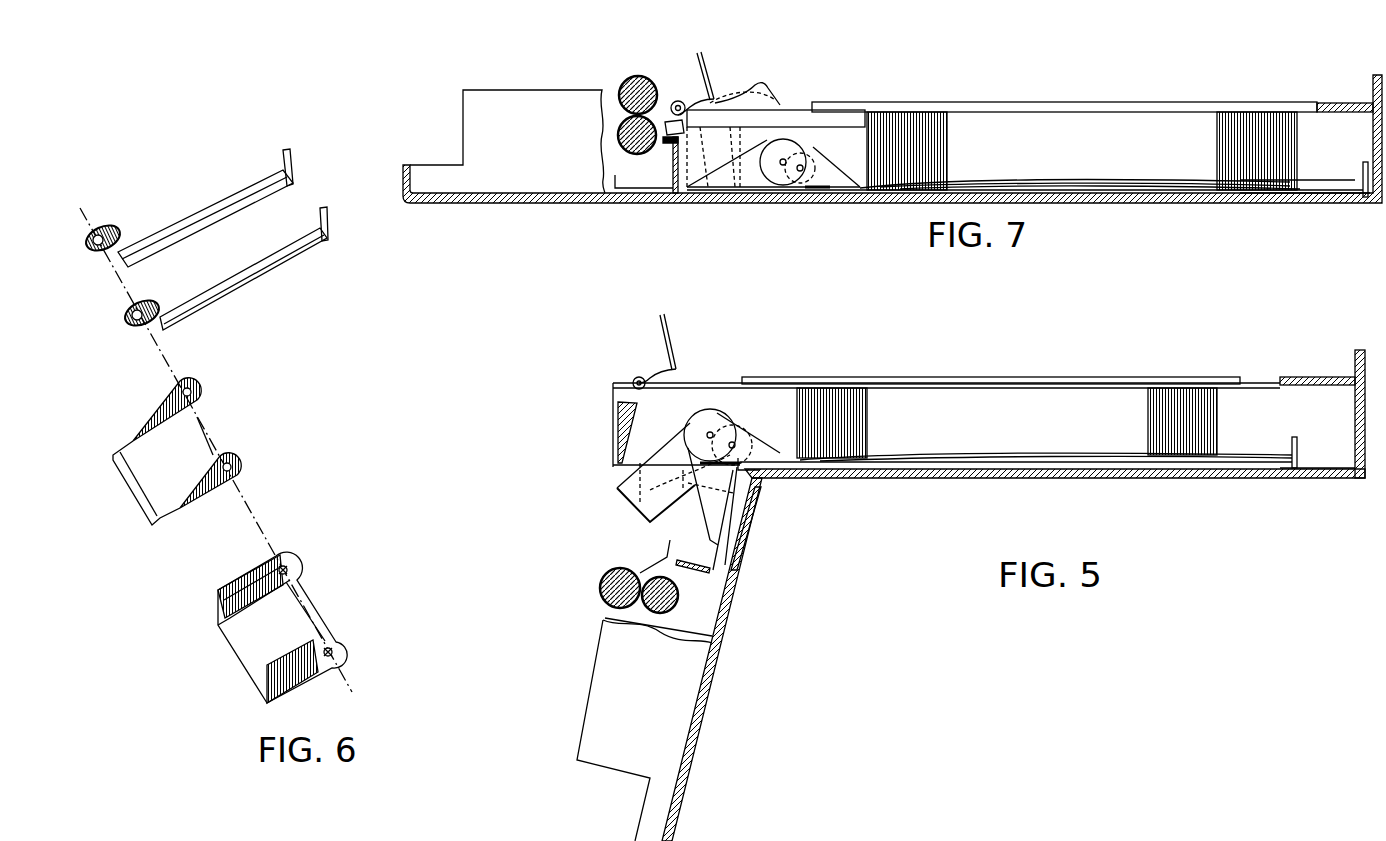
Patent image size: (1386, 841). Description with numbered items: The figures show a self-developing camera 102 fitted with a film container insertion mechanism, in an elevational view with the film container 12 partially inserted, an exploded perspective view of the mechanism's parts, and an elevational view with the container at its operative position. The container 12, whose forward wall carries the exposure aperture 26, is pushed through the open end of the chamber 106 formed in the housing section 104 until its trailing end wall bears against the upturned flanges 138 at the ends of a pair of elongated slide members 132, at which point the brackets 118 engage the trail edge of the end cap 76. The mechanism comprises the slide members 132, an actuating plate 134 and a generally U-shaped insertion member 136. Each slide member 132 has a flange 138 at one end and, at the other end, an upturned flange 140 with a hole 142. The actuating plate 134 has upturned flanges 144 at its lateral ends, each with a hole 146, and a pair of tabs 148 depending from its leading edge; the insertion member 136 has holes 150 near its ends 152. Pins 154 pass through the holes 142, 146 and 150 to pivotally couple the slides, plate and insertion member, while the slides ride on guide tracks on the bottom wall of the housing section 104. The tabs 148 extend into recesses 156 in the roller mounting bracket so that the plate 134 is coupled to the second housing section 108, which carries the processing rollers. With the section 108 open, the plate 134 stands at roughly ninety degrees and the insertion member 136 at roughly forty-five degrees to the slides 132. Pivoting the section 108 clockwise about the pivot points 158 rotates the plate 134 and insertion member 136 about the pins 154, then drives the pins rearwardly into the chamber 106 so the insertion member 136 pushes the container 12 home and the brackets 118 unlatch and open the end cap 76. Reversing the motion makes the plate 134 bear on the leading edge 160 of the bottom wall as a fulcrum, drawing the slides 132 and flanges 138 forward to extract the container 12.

In FIG. 7, the film container 12 is at (1147, 178).
In FIG. 5, the film container 12 is at (1153, 460).
In FIG. 7, the exposure aperture 26 is at (876, 102).
In FIG. 5, the exposure aperture 26 is at (853, 377).
In FIG. 7, the end cap 76 is at (680, 100).
In FIG. 5, the end cap 76 is at (613, 388).
In FIG. 7, the camera 102 is at (884, 210).
In FIG. 5, the camera 102 is at (957, 503).
In FIG. 5, the housing section 104 is at (1116, 482).
In FIG. 7, the chamber 106 is at (1238, 190).
In FIG. 5, the chamber 106 is at (1266, 468).
In FIG. 7, the second housing section 108 is at (556, 208).
In FIG. 5, the second housing section 108 is at (706, 755).
In FIG. 7, the brackets 118 is at (704, 72).
In FIG. 5, the brackets 118 is at (670, 340).
In FIG. 7, the slide members 132 is at (1273, 194).
In FIG. 5, the slide members 132 is at (1005, 475).
In FIG. 6, the slide members 132 is at (203, 195).
In FIG. 7, the actuating plate 134 is at (758, 192).
In FIG. 5, the actuating plate 134 is at (737, 498).
In FIG. 6, the actuating plate 134 is at (206, 420).
In FIG. 7, the insertion member 136 is at (673, 170).
In FIG. 5, the insertion member 136 is at (621, 510).
In FIG. 6, the insertion member 136 is at (216, 600).
In FIG. 7, the upturned flange 138 is at (1363, 163).
In FIG. 5, the upturned flange 138 is at (1295, 446).
In FIG. 6, the upturned flange 138 is at (288, 153).
In FIG. 6, the upturned flange 140 is at (130, 214).
In FIG. 6, the hole 142 is at (96, 249).
In FIG. 6, the upturned flanges 144 is at (190, 382).
In FIG. 6, the hole 146 is at (192, 391).
In FIG. 5, the tabs 148 is at (707, 556).
In FIG. 6, the tabs 148 is at (113, 460).
In FIG. 6, the holes 150 is at (288, 570).
In FIG. 6, the ends 152 is at (290, 560).
In FIG. 7, the pins 154 is at (800, 150).
In FIG. 5, the pins 154 is at (716, 410).
In FIG. 5, the recesses 156 is at (686, 579).
In FIG. 7, the pivot points 158 is at (803, 170).
In FIG. 5, the pivot points 158 is at (744, 440).
In FIG. 5, the leading edge 160 is at (746, 472).